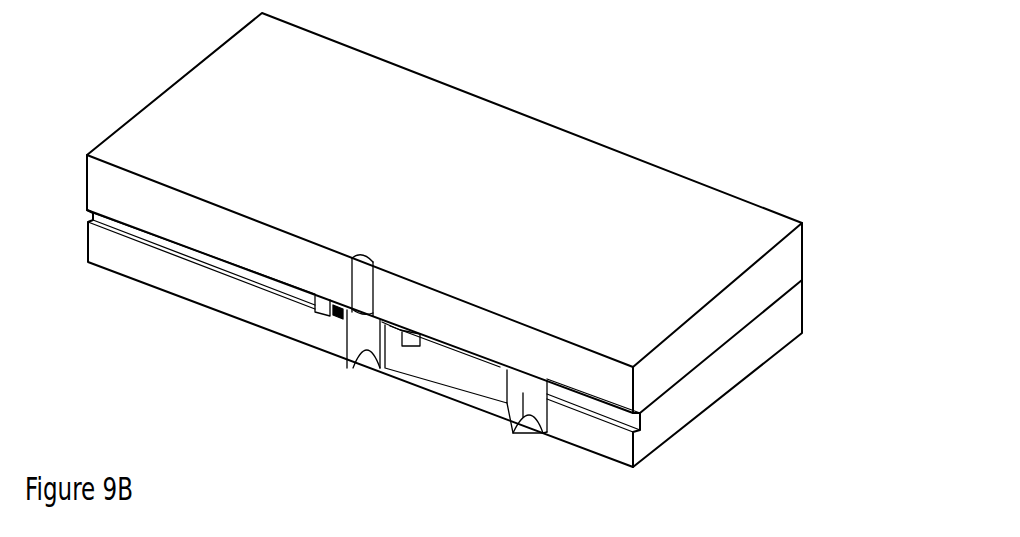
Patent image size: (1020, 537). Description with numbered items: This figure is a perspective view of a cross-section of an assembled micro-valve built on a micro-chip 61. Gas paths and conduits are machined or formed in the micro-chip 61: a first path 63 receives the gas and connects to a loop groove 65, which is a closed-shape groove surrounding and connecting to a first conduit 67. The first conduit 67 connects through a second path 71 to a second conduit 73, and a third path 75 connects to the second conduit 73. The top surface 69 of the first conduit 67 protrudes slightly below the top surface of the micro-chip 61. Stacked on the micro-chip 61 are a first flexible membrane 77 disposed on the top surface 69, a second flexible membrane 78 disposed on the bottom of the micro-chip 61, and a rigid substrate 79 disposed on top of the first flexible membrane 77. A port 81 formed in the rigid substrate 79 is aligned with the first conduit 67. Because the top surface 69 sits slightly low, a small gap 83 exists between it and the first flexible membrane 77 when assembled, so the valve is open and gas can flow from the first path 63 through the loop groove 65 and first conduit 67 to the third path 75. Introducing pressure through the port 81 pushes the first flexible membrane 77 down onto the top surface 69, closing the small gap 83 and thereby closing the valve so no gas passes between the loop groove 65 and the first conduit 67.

The micro-chip 61 is at (755, 355).
The first path 63 is at (198, 258).
The loop groove 65 is at (317, 313).
The first conduit 67 is at (358, 342).
The top surface of the first conduit 69 is at (387, 327).
The second path 71 is at (440, 385).
The second conduit 73 is at (523, 395).
The third path 75 is at (597, 417).
The first flexible membrane 77 is at (377, 305).
The second flexible membrane 78 is at (528, 430).
The rigid substrate 79 is at (788, 262).
The port 81 is at (360, 263).
The small gap 83 is at (337, 313).